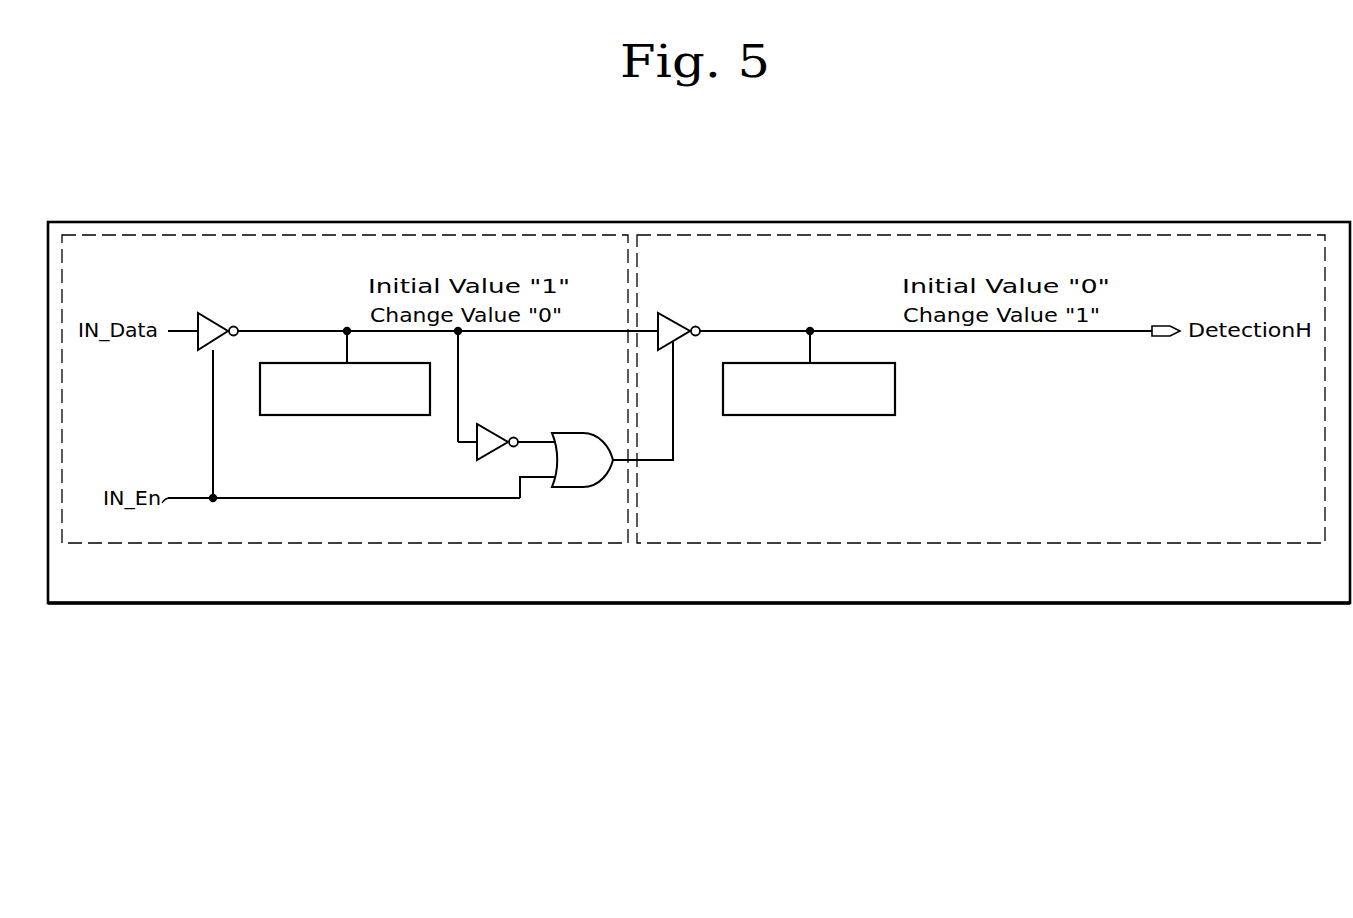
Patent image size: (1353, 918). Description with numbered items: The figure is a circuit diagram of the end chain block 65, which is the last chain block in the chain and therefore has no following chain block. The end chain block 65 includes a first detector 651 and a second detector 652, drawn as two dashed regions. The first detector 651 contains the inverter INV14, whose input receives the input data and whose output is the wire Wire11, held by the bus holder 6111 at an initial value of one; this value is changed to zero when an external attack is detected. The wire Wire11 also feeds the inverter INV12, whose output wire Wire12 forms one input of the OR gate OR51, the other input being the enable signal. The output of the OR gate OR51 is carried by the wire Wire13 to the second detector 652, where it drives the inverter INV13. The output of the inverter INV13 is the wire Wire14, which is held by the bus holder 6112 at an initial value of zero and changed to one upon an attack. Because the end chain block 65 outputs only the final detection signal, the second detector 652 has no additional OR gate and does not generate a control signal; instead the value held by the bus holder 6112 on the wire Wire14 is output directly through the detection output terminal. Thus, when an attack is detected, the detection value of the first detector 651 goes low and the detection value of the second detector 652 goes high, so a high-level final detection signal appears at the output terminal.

The end chain block 65 is at (1290, 221).
The first detector 651 is at (585, 232).
The second detector 652 is at (1123, 233).
The bus holder 6111 is at (347, 416).
The bus holder 6112 is at (840, 416).
The inverter INV14 is at (226, 322).
The inverter INV13 is at (682, 322).
The inverter INV12 is at (490, 432).
The OR gate OR51 is at (576, 489).
The wire Wire11 is at (448, 374).
The wire Wire12 is at (548, 418).
The wire Wire13 is at (685, 400).
The wire Wire14 is at (926, 321).